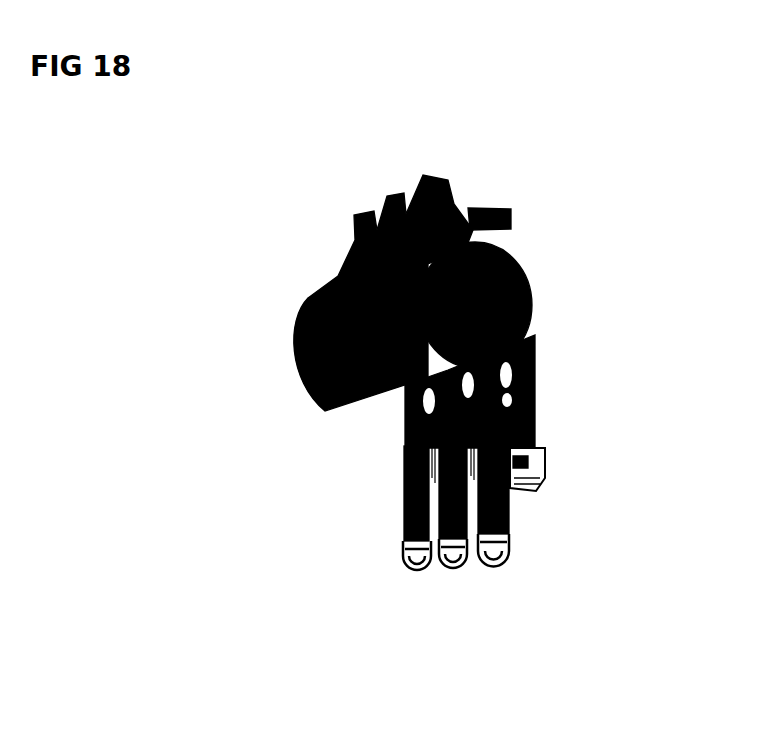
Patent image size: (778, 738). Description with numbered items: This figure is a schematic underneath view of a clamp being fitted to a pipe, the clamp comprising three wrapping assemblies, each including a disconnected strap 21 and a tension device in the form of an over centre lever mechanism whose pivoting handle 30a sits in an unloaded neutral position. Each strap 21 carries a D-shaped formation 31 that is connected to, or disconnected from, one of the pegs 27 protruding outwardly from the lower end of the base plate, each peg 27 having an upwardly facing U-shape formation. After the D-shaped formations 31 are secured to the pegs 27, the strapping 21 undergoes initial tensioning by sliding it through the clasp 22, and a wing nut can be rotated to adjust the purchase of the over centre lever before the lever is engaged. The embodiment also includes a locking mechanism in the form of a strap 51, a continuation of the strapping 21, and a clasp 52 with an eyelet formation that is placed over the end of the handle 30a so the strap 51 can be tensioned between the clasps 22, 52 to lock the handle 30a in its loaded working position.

The peg 27 is at (290, 352).
The handle 30a is at (503, 205).
The clasp 22 is at (522, 350).
The strap 51 is at (525, 405).
The clasp 52 is at (537, 452).
The strap 21 is at (495, 505).
The D-shaped formation 31 is at (483, 560).